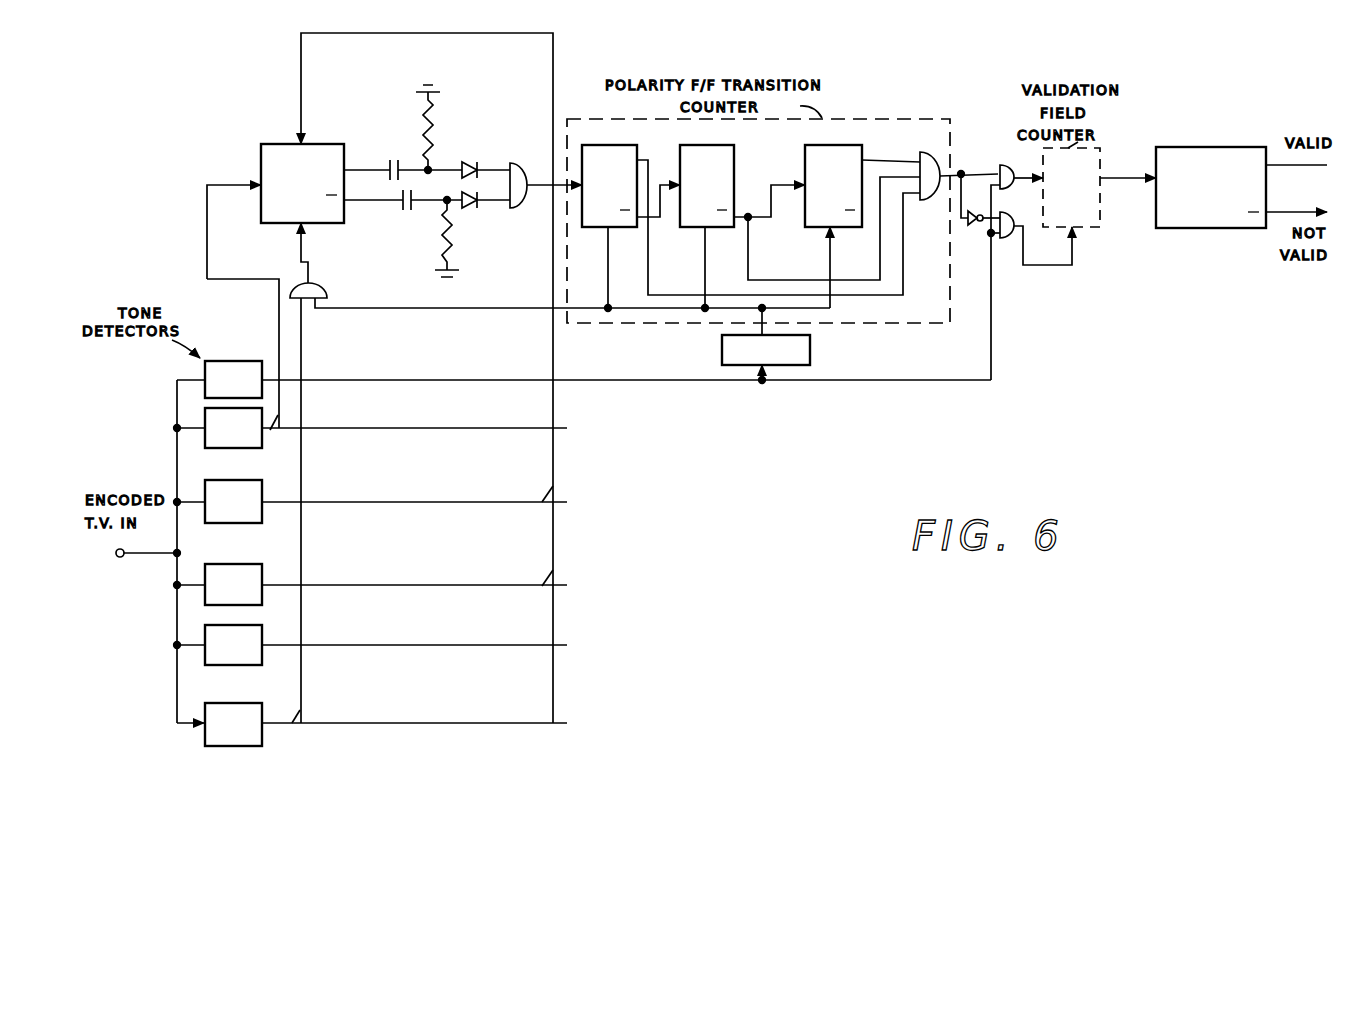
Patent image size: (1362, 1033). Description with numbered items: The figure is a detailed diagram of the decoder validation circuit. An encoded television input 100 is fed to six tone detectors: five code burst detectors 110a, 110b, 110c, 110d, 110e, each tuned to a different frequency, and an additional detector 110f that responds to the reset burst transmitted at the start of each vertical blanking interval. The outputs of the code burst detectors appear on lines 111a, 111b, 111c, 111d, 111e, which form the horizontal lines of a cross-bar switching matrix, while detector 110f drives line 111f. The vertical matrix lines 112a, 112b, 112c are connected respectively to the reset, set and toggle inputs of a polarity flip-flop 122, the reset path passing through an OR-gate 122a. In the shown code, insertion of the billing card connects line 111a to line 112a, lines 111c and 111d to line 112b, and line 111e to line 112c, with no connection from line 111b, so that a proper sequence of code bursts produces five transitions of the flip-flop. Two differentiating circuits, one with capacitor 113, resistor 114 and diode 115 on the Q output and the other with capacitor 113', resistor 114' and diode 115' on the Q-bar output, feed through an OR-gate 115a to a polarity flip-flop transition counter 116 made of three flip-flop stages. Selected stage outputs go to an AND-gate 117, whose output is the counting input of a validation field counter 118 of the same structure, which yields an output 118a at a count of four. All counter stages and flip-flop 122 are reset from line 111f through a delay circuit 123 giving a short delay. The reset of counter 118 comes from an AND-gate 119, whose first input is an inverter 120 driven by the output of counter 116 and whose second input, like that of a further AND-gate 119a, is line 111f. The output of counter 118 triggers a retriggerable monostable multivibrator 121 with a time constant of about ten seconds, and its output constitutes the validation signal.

The encoded TV input 100 is at (120, 562).
The code burst detector 110a is at (224, 748).
The code burst detector 110b is at (218, 667).
The code burst detector 110c is at (240, 563).
The code burst detector 110d is at (243, 525).
The code burst detector 110e is at (222, 449).
The tone detector 110f is at (241, 346).
The line 111a is at (292, 725).
The line 111b is at (285, 647).
The line 111c is at (340, 587).
The line 111d is at (386, 504).
The line 111e is at (268, 430).
The line 111f is at (368, 381).
The vertical line 112a is at (302, 455).
The vertical line 112b is at (556, 357).
The vertical line 112c is at (258, 279).
The capacitor 113 is at (403, 157).
The capacitor 113' is at (403, 213).
The resistor 114 is at (454, 129).
The resistor 114' is at (470, 237).
The diode 115 is at (490, 153).
The diode 115' is at (485, 212).
The OR-gate 115a is at (525, 210).
The polarity flip-flop transition counter 116 is at (893, 119).
The AND-gate 117 is at (938, 152).
The validation field counter 118 is at (1095, 229).
The counter output line 118a is at (1133, 165).
The AND-gate 119 is at (1006, 241).
The AND-gate 119a is at (1018, 166).
The inverter 120 is at (968, 226).
The retriggerable monostable multivibrator 121 is at (1212, 230).
The polarity flip-flop 122 is at (372, 121).
The OR-gate 122a is at (325, 292).
The delay circuit 123 is at (812, 355).